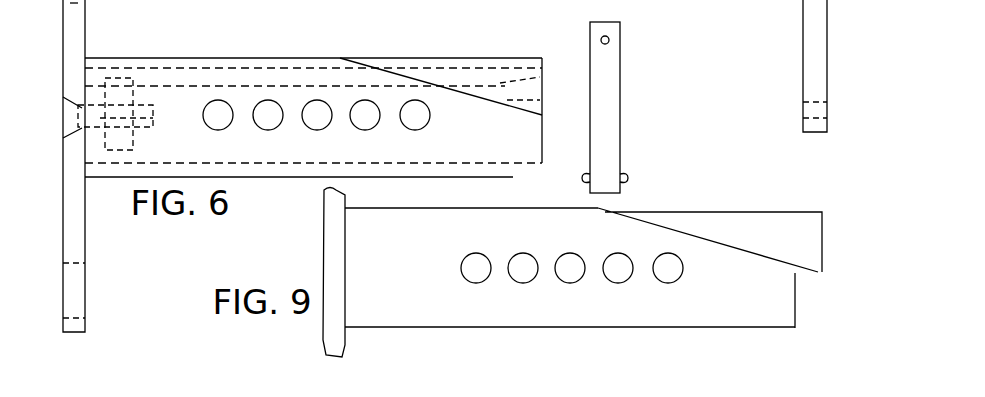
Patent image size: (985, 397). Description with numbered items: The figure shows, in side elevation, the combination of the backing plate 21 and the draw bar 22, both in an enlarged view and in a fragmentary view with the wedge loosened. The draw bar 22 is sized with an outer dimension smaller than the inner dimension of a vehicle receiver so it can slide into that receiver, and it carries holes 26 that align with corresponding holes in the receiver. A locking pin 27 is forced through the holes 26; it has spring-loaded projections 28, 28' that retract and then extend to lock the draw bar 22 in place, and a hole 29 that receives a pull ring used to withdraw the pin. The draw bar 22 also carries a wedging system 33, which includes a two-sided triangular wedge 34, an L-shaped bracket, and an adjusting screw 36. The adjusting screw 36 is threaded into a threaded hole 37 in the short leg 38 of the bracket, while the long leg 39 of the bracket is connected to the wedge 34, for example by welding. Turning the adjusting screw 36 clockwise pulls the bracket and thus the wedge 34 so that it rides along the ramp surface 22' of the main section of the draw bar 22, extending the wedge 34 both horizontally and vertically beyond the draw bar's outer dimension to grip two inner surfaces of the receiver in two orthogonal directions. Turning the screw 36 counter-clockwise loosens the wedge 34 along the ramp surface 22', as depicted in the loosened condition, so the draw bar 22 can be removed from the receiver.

In FIG. 9, the backing plate 21 is at (322, 337).
In FIG. 6, the draw bar 22 is at (313, 31).
In FIG. 9, the draw bar 22 is at (570, 297).
In FIG. 6, the ramp surface 22' is at (502, 114).
In FIG. 6, the holes 26 is at (273, 118).
In FIG. 9, the holes 26 is at (472, 275).
In FIG. 6, the locking pin 27 is at (612, 112).
In FIG. 6, the spring-loaded projections 28 is at (650, 177).
In FIG. 6, the knob 28' is at (552, 185).
In FIG. 6, the hole 29 is at (609, 37).
In FIG. 6, the wedging system 33 is at (432, 45).
In FIG. 6, the two-sided triangular wedge 34 is at (530, 100).
In FIG. 9, the two-sided triangular wedge 34 is at (735, 228).
In FIG. 6, the adjusting screw 36 is at (68, 114).
In FIG. 6, the threaded hole 37 is at (127, 103).
In FIG. 6, the short leg 38 is at (125, 152).
In FIG. 6, the long leg 39 is at (243, 83).